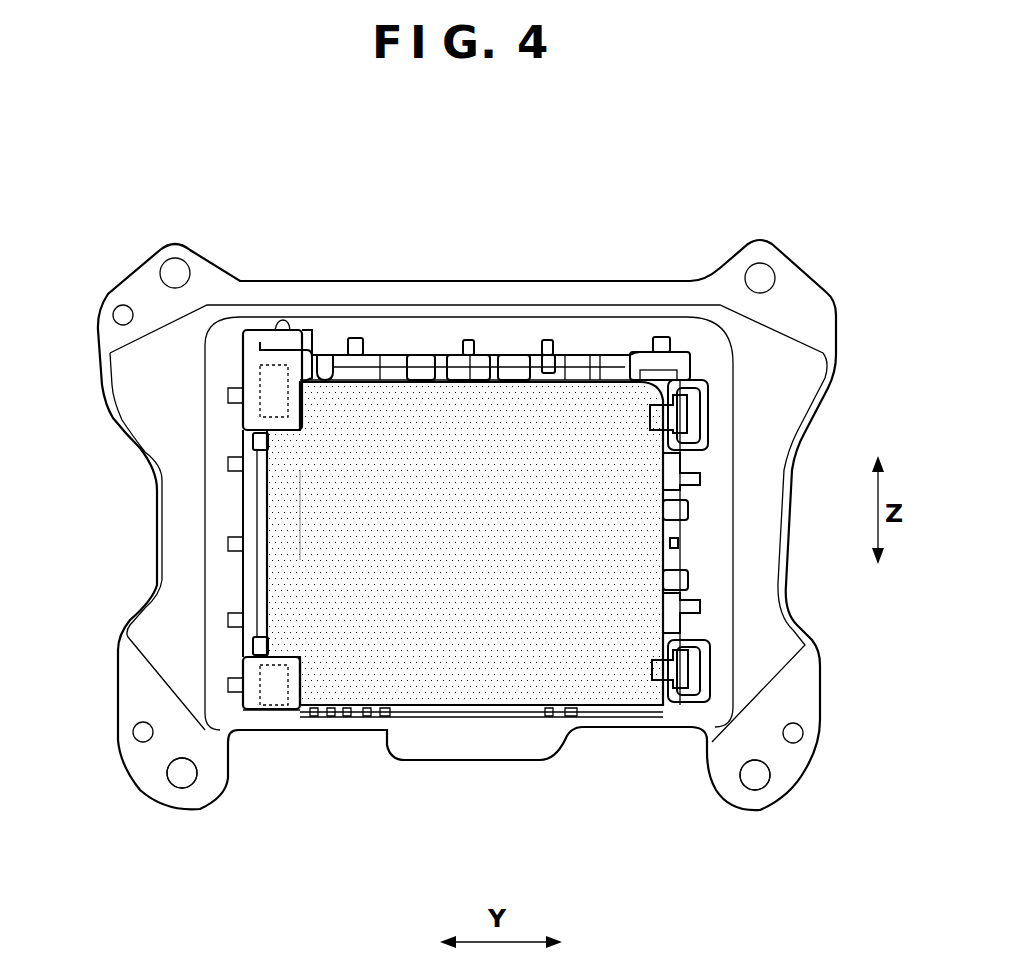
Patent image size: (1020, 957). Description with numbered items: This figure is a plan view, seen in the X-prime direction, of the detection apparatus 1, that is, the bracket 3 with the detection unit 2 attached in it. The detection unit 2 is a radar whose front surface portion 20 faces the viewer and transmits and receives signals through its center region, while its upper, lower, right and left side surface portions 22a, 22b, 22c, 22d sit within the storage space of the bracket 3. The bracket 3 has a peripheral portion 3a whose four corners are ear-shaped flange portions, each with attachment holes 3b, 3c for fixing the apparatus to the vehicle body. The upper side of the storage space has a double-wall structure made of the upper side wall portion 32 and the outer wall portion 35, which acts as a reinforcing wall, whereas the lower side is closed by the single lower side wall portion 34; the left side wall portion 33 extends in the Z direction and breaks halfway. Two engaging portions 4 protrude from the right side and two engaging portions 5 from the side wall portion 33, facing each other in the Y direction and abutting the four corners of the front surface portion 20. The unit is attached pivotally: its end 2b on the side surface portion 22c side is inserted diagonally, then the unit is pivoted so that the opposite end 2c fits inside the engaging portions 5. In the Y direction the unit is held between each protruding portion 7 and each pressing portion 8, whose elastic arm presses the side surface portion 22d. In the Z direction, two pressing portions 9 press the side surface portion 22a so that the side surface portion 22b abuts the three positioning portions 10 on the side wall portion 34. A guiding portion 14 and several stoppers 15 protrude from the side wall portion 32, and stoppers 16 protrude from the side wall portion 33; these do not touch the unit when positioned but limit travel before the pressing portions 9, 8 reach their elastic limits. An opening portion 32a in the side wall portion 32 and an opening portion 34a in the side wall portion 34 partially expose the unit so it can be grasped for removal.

The detection apparatus 1 is at (785, 226).
The detection unit 2 is at (532, 726).
The end 2b is at (280, 520).
The end 2c is at (650, 463).
The bracket 3 is at (108, 266).
The peripheral portion 3a is at (797, 790).
The attachment hole 3b is at (183, 790).
The attachment hole 3c is at (143, 743).
The engaging portion 4 is at (270, 383).
The engaging portion 5 is at (665, 418).
The protruding portion 7 is at (255, 443).
The pressing portion 8 is at (693, 580).
The pressing portion 9 is at (424, 372).
The positioning portion 10 is at (337, 718).
The guiding portion 14 is at (322, 368).
The stopper 15 is at (412, 363).
The stopper 16 is at (680, 541).
The front surface portion 20 is at (606, 702).
The upper side surface portion 22a is at (632, 362).
The lower side surface portion 22b is at (458, 718).
The right side surface portion 22c is at (252, 612).
The left side surface portion 22d is at (665, 563).
The side wall portion 32 is at (372, 352).
The opening portion 32a is at (590, 362).
The side wall portion 33 is at (820, 500).
The side wall portion 34 is at (306, 732).
The opening portion 34a is at (644, 730).
The wall portion 35 is at (303, 278).